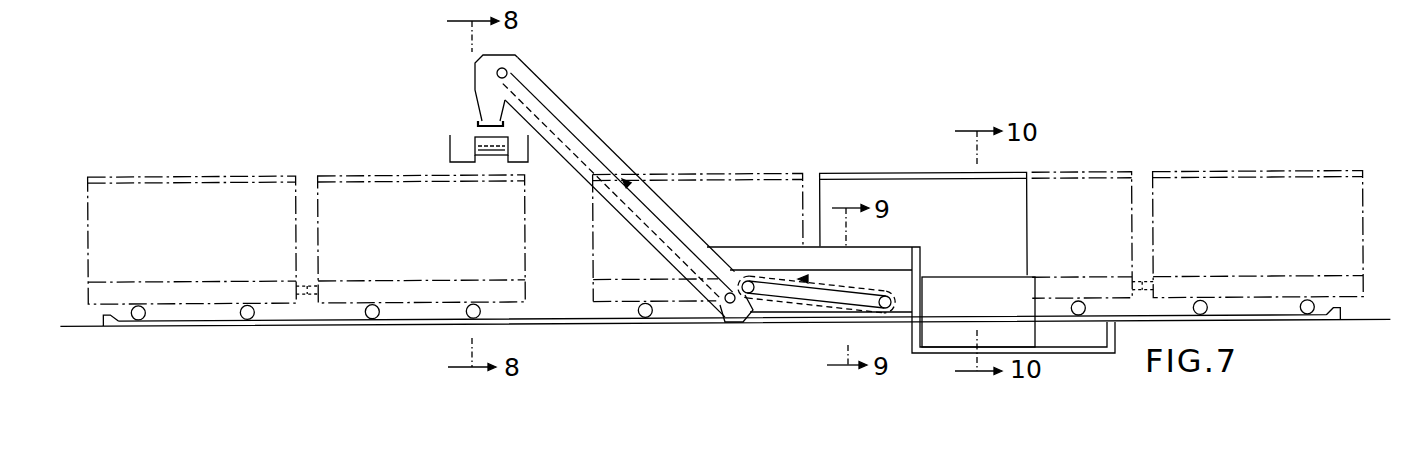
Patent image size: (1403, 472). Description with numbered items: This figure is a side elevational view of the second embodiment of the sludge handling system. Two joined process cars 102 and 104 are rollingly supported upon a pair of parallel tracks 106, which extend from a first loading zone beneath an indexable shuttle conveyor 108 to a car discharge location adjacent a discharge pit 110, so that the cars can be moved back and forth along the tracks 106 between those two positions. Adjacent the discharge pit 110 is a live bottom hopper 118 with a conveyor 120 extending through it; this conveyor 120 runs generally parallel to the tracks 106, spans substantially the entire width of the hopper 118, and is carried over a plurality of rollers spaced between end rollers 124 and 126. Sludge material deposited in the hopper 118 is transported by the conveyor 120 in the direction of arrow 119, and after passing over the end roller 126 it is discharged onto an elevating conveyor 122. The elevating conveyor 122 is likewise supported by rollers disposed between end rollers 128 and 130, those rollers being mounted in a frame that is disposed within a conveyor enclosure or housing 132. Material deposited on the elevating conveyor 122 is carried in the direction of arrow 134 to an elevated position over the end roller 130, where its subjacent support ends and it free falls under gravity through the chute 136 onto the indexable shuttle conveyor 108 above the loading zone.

The process car 102 is at (742, 211).
The process car 104 is at (992, 209).
The tracks 106 is at (567, 325).
The indexable shuttle conveyor 108 is at (492, 147).
The discharge pit 110 is at (1007, 277).
The live bottom hopper 118 is at (880, 288).
The arrow 119 is at (832, 278).
The conveyor 120 is at (779, 280).
The elevating conveyor 122 is at (588, 148).
The end roller 124 is at (892, 301).
The end roller 126 is at (752, 292).
The end roller 128 is at (720, 308).
The end roller 130 is at (508, 70).
The conveyor enclosure or housing 132 is at (572, 108).
The arrow 134 is at (638, 185).
The chute 136 is at (477, 97).